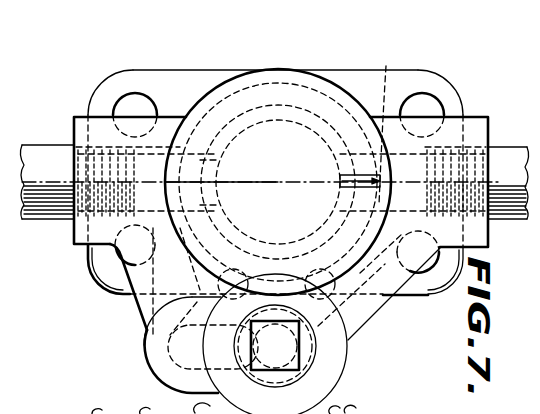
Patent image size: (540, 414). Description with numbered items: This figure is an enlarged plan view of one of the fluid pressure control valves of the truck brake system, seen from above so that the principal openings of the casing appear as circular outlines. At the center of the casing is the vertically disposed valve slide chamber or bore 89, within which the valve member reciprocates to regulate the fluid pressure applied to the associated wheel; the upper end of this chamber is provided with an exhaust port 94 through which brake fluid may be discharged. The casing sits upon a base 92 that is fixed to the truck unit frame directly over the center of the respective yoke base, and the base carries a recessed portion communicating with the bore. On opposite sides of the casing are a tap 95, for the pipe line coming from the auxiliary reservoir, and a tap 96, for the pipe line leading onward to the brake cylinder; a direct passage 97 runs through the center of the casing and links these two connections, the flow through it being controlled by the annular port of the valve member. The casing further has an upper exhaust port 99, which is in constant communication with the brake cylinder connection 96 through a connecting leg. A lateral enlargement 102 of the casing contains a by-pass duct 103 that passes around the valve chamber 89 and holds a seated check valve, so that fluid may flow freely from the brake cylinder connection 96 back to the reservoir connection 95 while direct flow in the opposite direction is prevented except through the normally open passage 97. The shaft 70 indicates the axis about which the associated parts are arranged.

The shaft 70 is at (50, 203).
The valve slide chamber or bore 89 is at (276, 118).
The base 92 is at (186, 76).
The exhaust port 94 is at (387, 112).
The tap 95 is at (74, 142).
The tap 96 is at (492, 225).
The direct passage 97 is at (337, 198).
The upper exhaust port 99 is at (228, 190).
The lateral enlargement 102 is at (360, 352).
The by-pass duct 103 is at (128, 297).